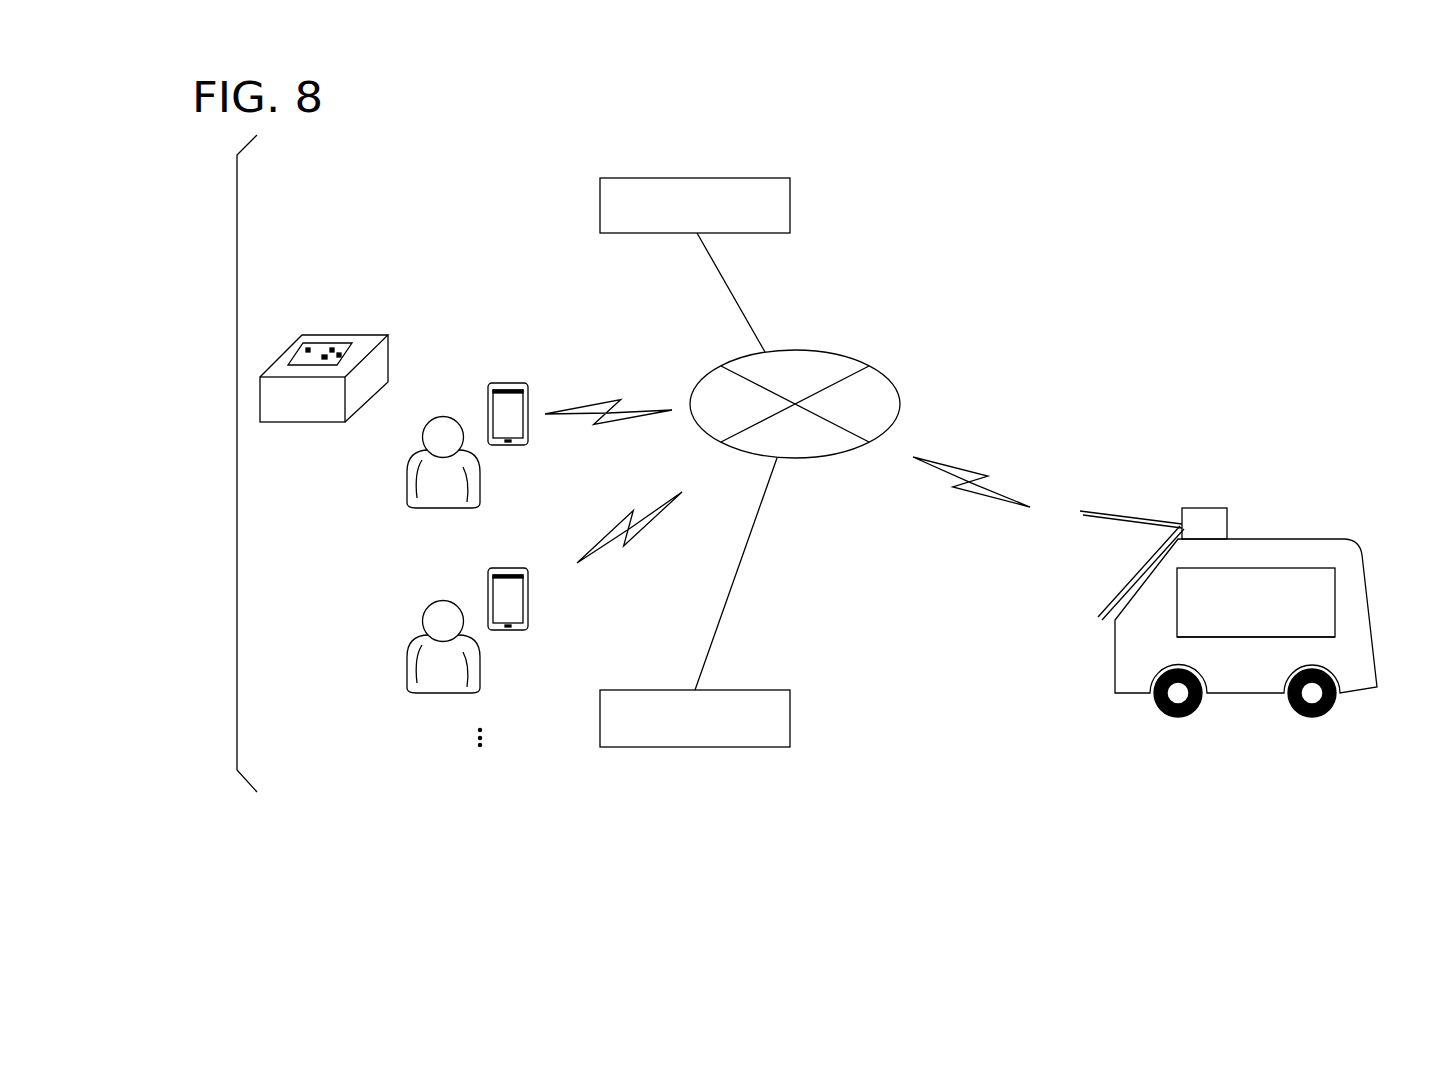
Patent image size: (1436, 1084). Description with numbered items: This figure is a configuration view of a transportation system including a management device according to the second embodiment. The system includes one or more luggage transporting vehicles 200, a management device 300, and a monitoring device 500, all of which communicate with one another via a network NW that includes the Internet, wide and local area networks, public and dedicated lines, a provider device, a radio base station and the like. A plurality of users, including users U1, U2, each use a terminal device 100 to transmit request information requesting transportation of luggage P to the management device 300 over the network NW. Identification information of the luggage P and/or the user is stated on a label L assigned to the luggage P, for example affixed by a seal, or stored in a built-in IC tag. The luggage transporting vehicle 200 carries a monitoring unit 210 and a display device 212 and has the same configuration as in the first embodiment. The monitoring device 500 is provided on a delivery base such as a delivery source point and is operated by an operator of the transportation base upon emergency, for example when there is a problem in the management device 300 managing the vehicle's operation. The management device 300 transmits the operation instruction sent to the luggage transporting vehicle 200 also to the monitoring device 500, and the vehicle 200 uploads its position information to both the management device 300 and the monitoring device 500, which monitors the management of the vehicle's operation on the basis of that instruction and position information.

The terminal device 100 is at (508, 383).
The luggage transporting vehicle 200 is at (1115, 657).
The monitoring unit 210 is at (1203, 507).
The display device 212 is at (1253, 637).
The management device 300 is at (723, 178).
The monitoring device 500 is at (721, 690).
The network NW is at (833, 355).
The label L is at (324, 341).
The luggage P is at (310, 422).
The user U1 is at (443, 416).
The user U2 is at (443, 601).